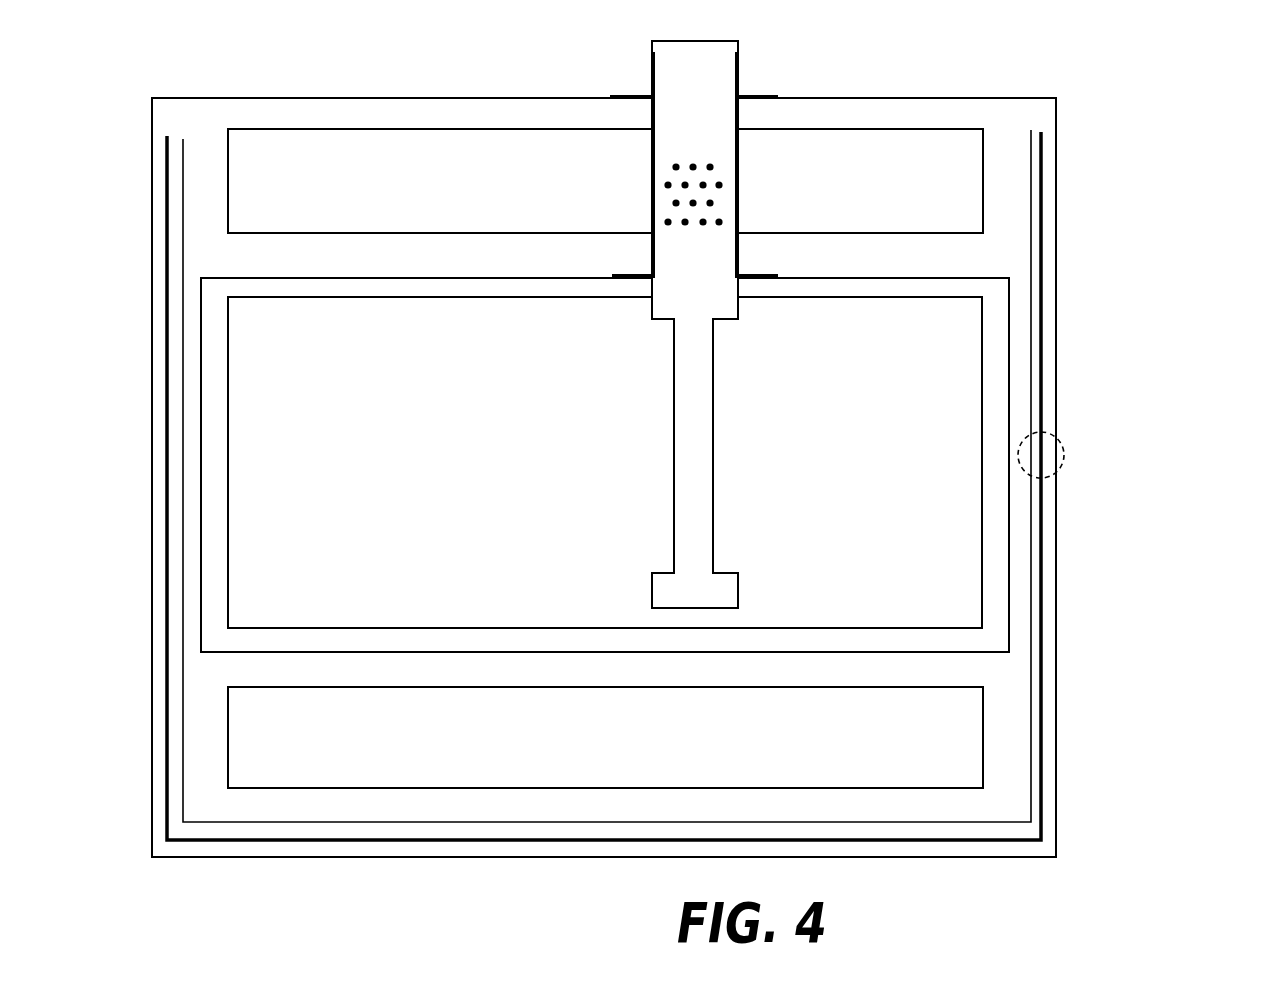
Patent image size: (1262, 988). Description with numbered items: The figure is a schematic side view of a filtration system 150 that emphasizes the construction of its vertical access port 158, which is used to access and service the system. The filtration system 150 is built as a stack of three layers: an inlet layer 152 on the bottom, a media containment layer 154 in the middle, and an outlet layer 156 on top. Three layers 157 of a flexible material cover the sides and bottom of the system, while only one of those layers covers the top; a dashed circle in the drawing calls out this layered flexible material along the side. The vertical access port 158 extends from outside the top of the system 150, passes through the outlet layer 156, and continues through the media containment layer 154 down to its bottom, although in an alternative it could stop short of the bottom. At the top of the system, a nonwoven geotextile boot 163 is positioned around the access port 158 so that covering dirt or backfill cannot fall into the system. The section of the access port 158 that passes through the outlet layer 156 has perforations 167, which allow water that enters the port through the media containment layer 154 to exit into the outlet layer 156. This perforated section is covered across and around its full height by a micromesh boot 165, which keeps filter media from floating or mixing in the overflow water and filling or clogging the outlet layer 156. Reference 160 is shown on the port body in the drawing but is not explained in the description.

The filtration system 150 is at (1136, 782).
The inlet layer 152 is at (963, 714).
The media containment layer 154 is at (960, 352).
The outlet layer 156 is at (972, 160).
The layers of flexible material 157 is at (1064, 457).
The vertical access port 158 is at (740, 150).
The shaft / probe member 160 is at (715, 38).
The nonwoven geotextile boot 163 is at (738, 78).
The micromesh boot 165 is at (738, 195).
The perforations 167 is at (668, 185).